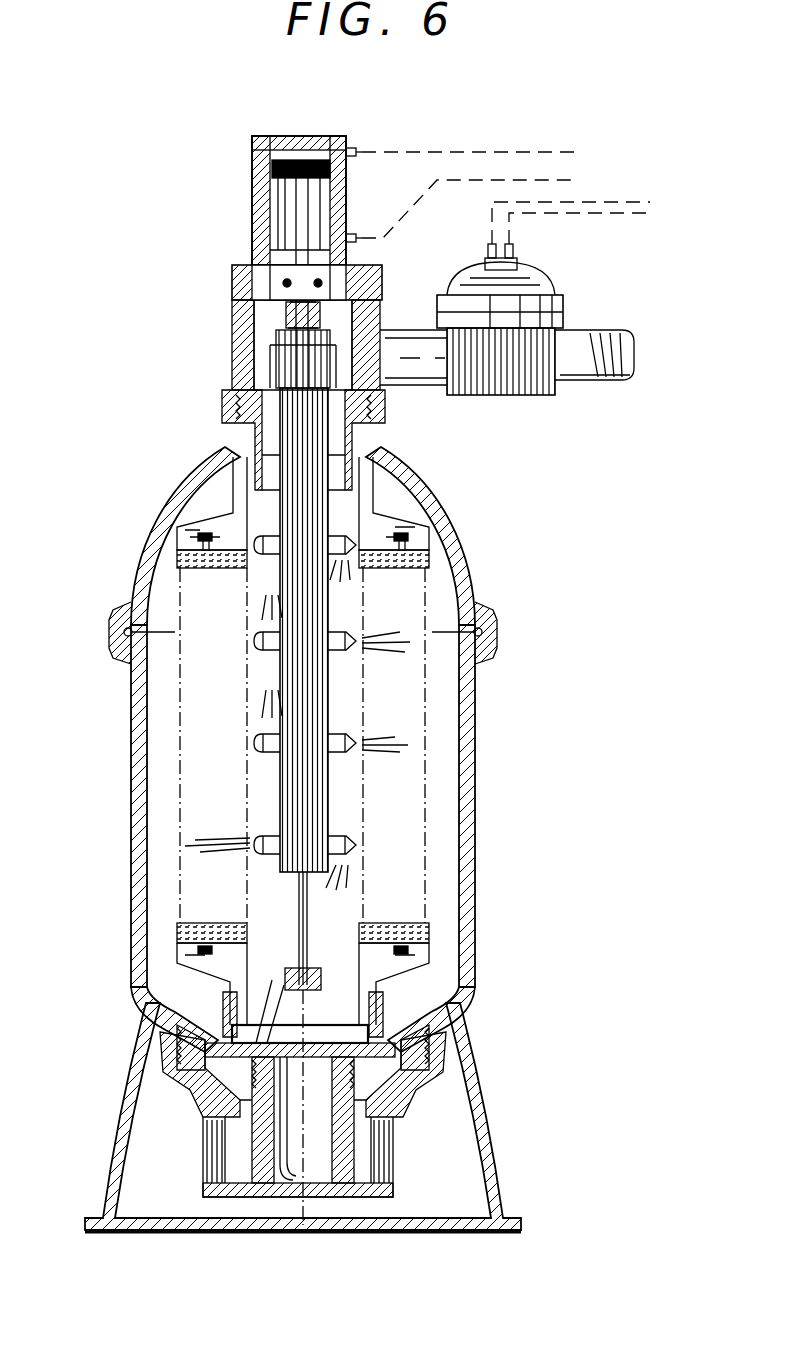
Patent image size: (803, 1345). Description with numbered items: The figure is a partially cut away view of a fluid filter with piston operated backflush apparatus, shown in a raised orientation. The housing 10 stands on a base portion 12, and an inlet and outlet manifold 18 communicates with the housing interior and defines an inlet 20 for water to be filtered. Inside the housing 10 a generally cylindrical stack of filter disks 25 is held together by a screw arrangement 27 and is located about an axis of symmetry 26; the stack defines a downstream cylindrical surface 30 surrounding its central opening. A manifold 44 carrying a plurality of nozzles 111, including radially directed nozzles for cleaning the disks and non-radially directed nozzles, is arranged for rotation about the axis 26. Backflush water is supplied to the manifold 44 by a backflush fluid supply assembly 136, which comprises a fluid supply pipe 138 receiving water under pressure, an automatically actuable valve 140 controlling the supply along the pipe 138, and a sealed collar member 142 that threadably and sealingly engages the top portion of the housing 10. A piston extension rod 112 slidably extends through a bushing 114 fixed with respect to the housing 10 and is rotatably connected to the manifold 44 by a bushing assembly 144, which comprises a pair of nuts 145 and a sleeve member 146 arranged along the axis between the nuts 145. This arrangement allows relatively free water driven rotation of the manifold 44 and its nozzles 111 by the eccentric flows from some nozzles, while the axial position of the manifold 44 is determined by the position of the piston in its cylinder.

The housing 10 is at (128, 722).
The base portion 12 is at (468, 1063).
The inlet and outlet manifold 18 is at (213, 1153).
The inlet 20 is at (208, 1168).
The filter disks 25 is at (205, 932).
The axis of symmetry 26 is at (320, 1177).
The screw arrangement 27 is at (408, 537).
The downstream cylindrical surface 30 is at (178, 773).
The manifold 44 is at (330, 715).
The nozzles 111 is at (352, 635).
The piston extension rod 112 is at (300, 205).
The bushing 114 is at (320, 983).
The backflush fluid supply assembly 136 is at (553, 395).
The fluid supply pipe 138 is at (615, 345).
The automatically actuable valve 140 is at (540, 282).
The sealed collar member 142 is at (242, 338).
The bushing assembly 144 is at (270, 287).
The nuts 145 is at (312, 305).
The sleeve member 146 is at (287, 337).